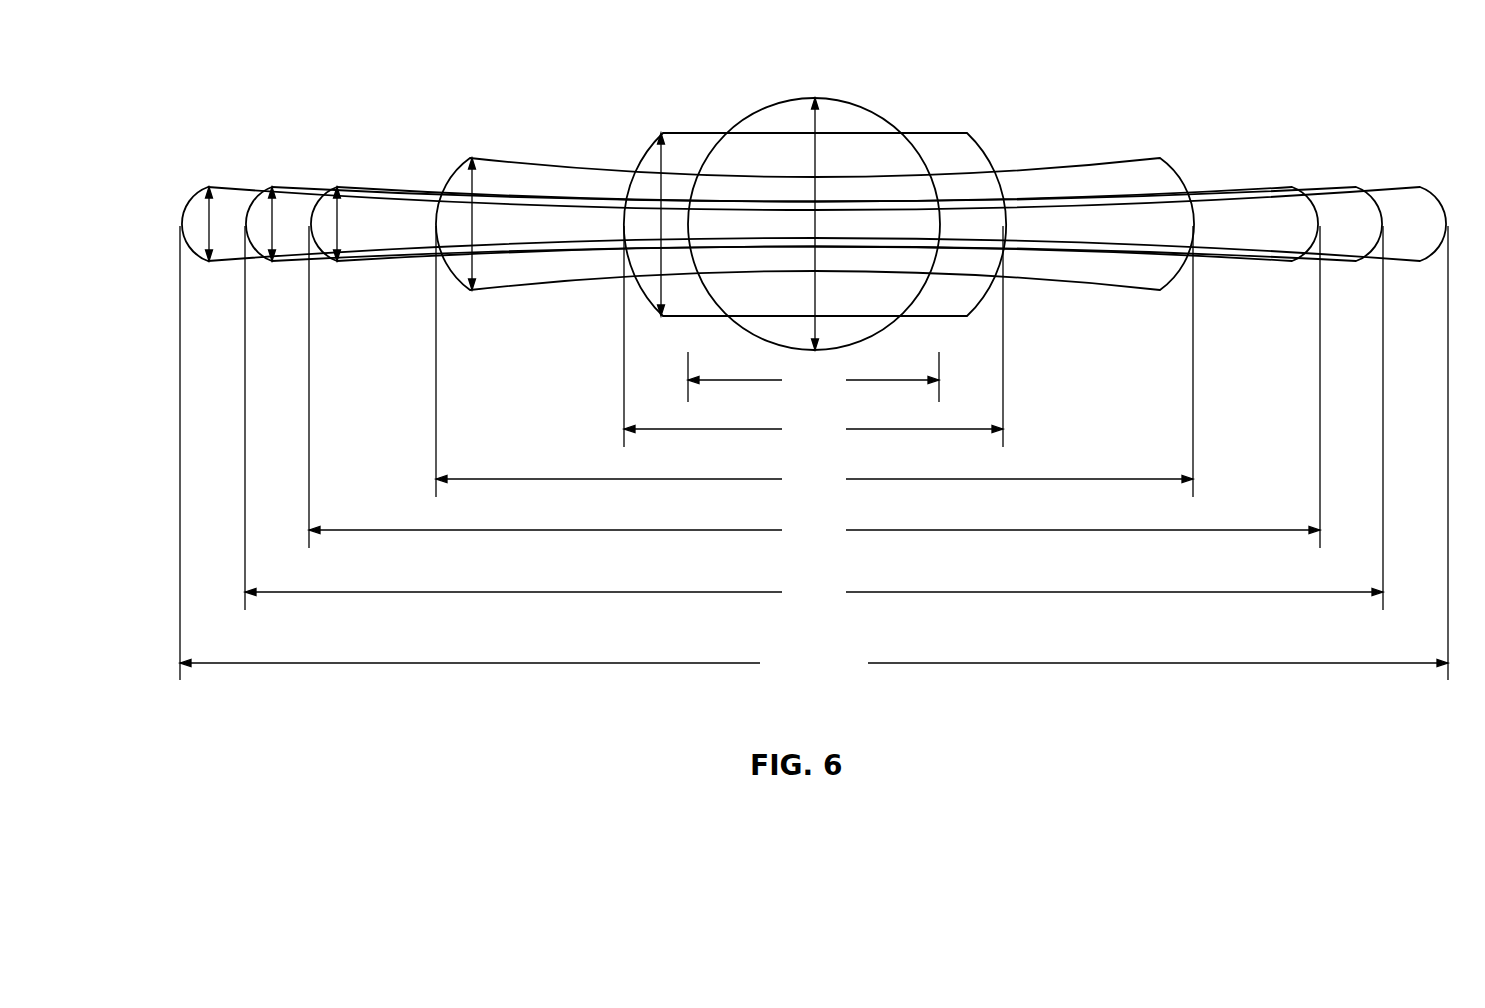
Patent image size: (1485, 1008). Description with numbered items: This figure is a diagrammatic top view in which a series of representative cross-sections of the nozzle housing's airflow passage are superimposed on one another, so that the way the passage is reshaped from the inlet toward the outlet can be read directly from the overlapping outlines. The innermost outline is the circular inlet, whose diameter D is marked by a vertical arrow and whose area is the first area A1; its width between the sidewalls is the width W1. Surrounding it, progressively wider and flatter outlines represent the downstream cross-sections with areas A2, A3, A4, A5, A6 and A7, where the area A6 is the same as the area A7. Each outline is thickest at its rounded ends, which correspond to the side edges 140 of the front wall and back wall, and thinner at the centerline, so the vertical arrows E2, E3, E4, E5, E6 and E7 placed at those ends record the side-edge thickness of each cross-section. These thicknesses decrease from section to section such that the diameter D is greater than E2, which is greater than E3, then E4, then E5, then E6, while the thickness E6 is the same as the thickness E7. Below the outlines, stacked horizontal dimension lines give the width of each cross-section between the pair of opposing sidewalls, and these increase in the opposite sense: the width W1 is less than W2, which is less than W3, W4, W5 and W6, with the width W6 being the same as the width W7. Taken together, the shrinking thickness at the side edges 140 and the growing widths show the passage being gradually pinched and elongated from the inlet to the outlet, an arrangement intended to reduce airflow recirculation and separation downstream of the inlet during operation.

The side edges 140 is at (825, 199).
The diameter of the inlet D is at (812, 128).
The area of first cross-section A1 is at (868, 112).
The area of second cross-section A2 is at (937, 131).
The area of third cross-section A3 is at (1104, 160).
The area of fourth cross-section A4 is at (1316, 205).
The area of fifth cross-section A5 is at (1380, 205).
The area of sixth cross-section A6 is at (825, 158).
The area of seventh cross-section A7 is at (1445, 200).
The side-edge thickness of second cross-section E2 is at (661, 150).
The side-edge thickness of third cross-section E3 is at (471, 183).
The side-edge thickness of fourth cross-section E4 is at (337, 213).
The side-edge thickness of fifth cross-section E5 is at (271, 210).
The side-edge thickness of sixth cross-section E6 is at (155, 218).
The side-edge thickness of seventh cross-section E7 is at (208, 218).
The width of first cross-section W1 is at (813, 377).
The width of second cross-section W2 is at (813, 336).
The width of third cross-section W3 is at (814, 361).
The width of fourth cross-section W4 is at (814, 387).
The width of fifth cross-section W5 is at (814, 418).
The width of sixth cross-section W6 is at (814, 453).
The width of seventh cross-section W7 is at (814, 453).